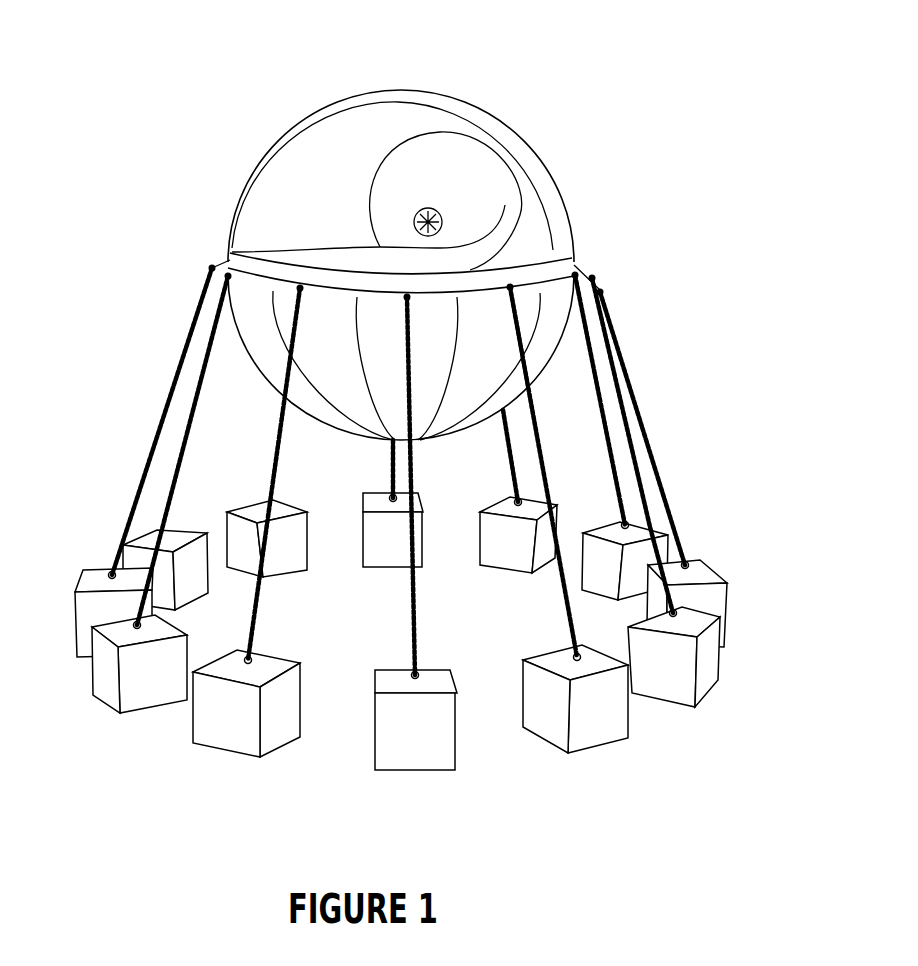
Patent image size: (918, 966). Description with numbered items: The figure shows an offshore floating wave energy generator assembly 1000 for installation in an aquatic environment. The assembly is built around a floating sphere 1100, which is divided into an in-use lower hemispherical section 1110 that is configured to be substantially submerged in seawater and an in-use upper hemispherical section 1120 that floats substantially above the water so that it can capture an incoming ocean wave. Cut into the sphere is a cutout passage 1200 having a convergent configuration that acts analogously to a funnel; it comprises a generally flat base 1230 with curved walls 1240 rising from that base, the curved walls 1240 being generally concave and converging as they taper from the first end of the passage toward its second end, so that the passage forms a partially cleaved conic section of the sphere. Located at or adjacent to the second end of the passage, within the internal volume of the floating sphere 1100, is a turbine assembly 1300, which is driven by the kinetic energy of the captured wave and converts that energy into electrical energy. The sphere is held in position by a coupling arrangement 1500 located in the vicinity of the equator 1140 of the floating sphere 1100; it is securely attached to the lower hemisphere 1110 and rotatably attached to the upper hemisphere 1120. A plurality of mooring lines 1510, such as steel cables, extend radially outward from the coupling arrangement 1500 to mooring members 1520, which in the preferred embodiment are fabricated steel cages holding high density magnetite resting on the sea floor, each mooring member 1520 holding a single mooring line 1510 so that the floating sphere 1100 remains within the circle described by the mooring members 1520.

The offshore floating wave energy generator assembly 1000 is at (353, 71).
The floating sphere 1100 is at (541, 124).
The lower hemispherical section 1110 is at (550, 357).
The upper hemispherical section 1120 is at (557, 187).
The equator 1140 is at (598, 285).
The cutout passage 1200 is at (300, 258).
The flat base 1230 is at (282, 215).
The curved walls 1240 is at (317, 147).
The turbine assembly 1300 is at (430, 196).
The coupling arrangement 1500 is at (149, 382).
The mooring lines 1510 is at (155, 437).
The mooring members 1520 is at (727, 607).